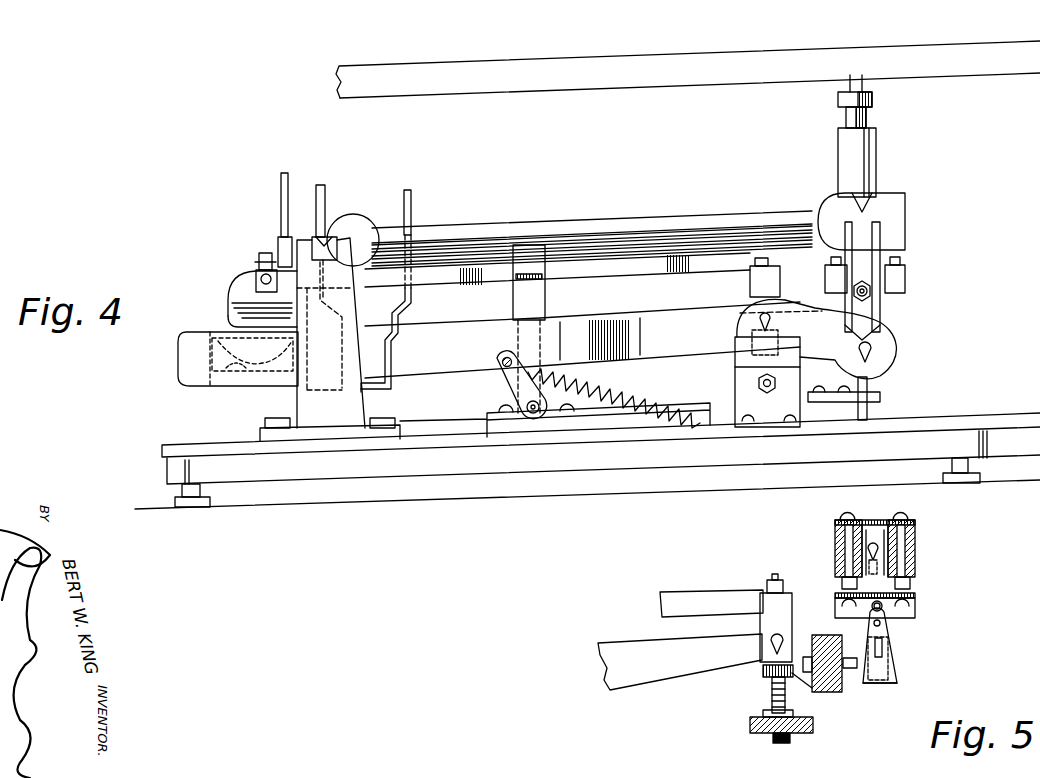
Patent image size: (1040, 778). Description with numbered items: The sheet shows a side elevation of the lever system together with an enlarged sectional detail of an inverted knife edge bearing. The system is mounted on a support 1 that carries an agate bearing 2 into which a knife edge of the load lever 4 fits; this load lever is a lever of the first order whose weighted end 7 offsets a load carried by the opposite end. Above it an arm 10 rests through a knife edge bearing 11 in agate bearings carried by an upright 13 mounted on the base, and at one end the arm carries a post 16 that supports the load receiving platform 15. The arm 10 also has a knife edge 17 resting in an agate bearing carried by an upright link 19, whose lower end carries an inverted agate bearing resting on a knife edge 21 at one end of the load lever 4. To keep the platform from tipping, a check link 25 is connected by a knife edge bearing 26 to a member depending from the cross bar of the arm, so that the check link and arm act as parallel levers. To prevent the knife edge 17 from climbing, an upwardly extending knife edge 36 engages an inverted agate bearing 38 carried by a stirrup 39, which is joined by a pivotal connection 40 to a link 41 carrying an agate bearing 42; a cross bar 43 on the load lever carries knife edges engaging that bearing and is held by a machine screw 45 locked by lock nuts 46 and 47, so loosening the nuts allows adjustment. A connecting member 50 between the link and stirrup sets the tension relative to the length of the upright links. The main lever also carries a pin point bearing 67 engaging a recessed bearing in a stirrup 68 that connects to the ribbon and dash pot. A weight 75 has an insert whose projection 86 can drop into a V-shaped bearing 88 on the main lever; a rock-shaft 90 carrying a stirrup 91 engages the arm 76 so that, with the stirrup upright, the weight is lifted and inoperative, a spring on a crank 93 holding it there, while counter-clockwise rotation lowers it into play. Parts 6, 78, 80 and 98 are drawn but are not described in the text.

In FIG. 4, the support 1 is at (983, 416).
In FIG. 4, the agate bearing 2 is at (801, 347).
In FIG. 4, the load lever 4 is at (676, 346).
In FIG. 5, the load lever 4 is at (670, 670).
In FIG. 4, the block 6 is at (737, 330).
In FIG. 4, the weighted end 7 is at (187, 338).
In FIG. 4, the arm 10 is at (667, 230).
In FIG. 4, the knife edge bearing 11 is at (326, 238).
In FIG. 4, the upright 13 is at (302, 398).
In FIG. 4, the load receiving platform 15 is at (762, 34).
In FIG. 4, the post 16 is at (872, 167).
In FIG. 4, the knife edge 17 is at (900, 208).
In FIG. 4, the upright link 19 is at (878, 283).
In FIG. 4, the knife edge 21 is at (873, 350).
In FIG. 4, the check link 25 is at (466, 415).
In FIG. 4, the knife edge bearing 26 is at (880, 396).
In FIG. 5, the knife edge 36 is at (883, 560).
In FIG. 5, the inverted agate bearing 38 is at (873, 535).
In FIG. 5, the stirrup 39 is at (915, 544).
In FIG. 5, the pivotal connection 40 is at (915, 612).
In FIG. 5, the link 41 is at (897, 638).
In FIG. 5, the agate bearing 42 is at (890, 656).
In FIG. 5, the cross bar 43 is at (890, 632).
In FIG. 5, the machine screw 45 is at (860, 684).
In FIG. 5, the lock nut 46 is at (808, 635).
In FIG. 5, the lock nut 47 is at (848, 658).
In FIG. 5, the connecting member 50 is at (915, 598).
In FIG. 4, the pin point bearing 67 is at (401, 322).
In FIG. 4, the stirrup 68 is at (412, 208).
In FIG. 4, the weight 75 is at (238, 286).
In FIG. 4, the arm 76 is at (695, 280).
In FIG. 5, the arm 76 is at (683, 605).
In FIG. 5, the block 78 is at (777, 645).
In FIG. 5, the screw 80 is at (770, 693).
In FIG. 4, the projection 86 is at (258, 270).
In FIG. 4, the V-shaped bearing 88 is at (227, 348).
In FIG. 4, the rock-shaft 90 is at (533, 418).
In FIG. 4, the stirrup 91 is at (524, 297).
In FIG. 4, the crank 93 is at (614, 397).
In FIG. 4, the lever 98 is at (505, 384).